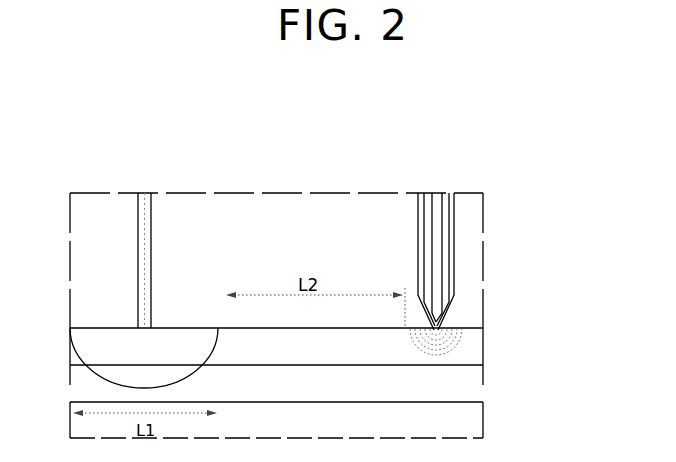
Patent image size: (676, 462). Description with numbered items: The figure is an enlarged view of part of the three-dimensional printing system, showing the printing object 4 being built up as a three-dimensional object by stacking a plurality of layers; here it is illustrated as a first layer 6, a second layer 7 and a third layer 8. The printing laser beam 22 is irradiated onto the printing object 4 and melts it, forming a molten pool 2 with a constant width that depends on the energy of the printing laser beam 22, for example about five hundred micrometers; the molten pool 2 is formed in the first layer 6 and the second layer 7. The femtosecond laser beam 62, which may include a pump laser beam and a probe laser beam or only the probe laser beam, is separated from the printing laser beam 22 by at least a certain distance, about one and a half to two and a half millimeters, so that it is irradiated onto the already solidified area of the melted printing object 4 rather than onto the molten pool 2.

The molten pool 2 is at (80, 343).
The printing object 4 is at (555, 352).
The first layer 6 is at (488, 362).
The second layer 7 is at (473, 383).
The third layer 8 is at (478, 418).
The printing laser beam 22 is at (152, 233).
The femtosecond laser beam 62 is at (418, 222).